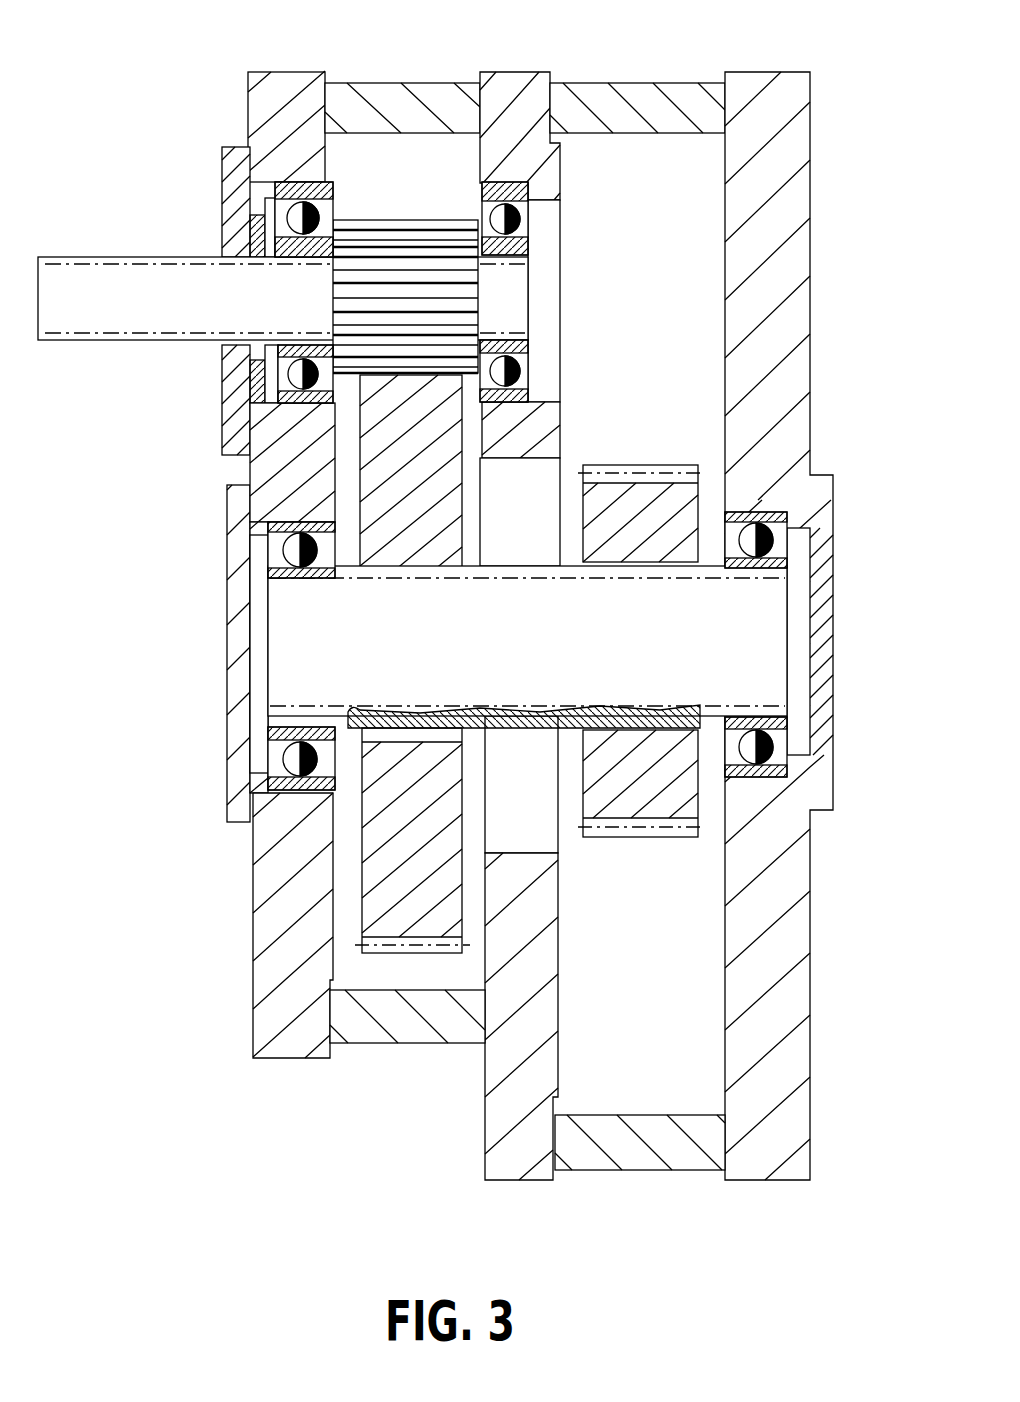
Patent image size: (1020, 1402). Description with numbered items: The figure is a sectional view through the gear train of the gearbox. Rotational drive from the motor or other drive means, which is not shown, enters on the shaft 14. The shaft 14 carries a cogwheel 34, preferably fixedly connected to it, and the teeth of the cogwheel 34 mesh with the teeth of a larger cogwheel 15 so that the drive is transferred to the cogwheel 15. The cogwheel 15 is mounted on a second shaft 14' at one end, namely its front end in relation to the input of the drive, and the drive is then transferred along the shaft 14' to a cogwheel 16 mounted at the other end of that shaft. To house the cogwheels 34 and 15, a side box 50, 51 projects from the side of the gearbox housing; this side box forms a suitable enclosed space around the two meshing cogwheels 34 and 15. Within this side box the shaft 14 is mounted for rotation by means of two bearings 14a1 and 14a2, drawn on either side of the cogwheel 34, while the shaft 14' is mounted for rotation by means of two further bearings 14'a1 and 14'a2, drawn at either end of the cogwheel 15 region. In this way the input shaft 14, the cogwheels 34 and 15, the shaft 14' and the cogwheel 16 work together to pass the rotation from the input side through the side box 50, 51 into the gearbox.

The shaft 14 is at (283, 359).
The bearing 14a1 is at (280, 214).
The bearing 14a2 is at (503, 188).
The cogwheel 34 is at (398, 252).
The shaft 14' is at (471, 647).
The bearing 14'a1 is at (215, 650).
The bearing 14'a2 is at (822, 585).
The cogwheel 15 is at (385, 843).
The cogwheel 16 is at (700, 795).
The side box 50 is at (272, 985).
The side box 51 is at (410, 1020).